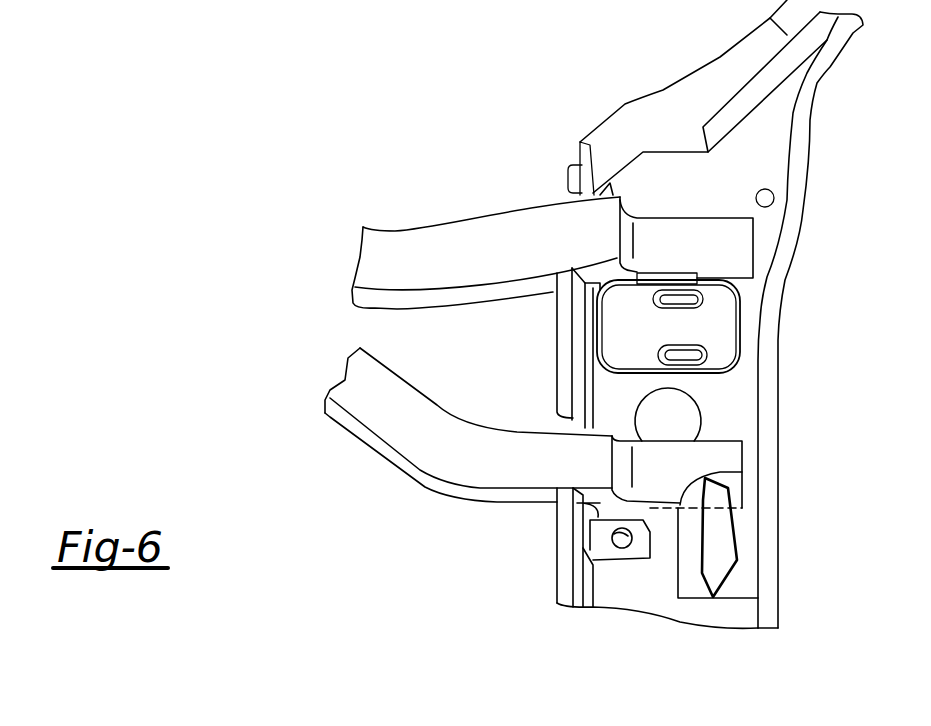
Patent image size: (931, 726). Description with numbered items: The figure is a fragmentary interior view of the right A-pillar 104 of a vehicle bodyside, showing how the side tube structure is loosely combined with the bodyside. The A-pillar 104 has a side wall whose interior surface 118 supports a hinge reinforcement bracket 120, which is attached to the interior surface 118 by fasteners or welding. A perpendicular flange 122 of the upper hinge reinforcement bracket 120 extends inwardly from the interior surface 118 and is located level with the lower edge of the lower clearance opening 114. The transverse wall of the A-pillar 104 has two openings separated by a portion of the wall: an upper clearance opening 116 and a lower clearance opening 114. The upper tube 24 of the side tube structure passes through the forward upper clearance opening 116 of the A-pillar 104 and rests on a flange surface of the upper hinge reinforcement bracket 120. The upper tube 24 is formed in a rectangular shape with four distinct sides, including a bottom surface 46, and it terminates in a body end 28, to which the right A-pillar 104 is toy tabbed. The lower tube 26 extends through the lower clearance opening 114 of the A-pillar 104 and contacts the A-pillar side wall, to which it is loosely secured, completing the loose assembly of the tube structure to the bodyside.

The upper tube 24 is at (409, 247).
The lower tube 26 is at (509, 470).
The body end 28 is at (679, 256).
The bottom surface 46 is at (679, 478).
The A-pillar 104 is at (781, 301).
The lower clearance opening 114 is at (560, 427).
The upper clearance opening 116 is at (577, 200).
The interior surface 118 is at (747, 413).
The hinge reinforcement bracket 120 is at (623, 343).
The perpendicular flange 122 is at (693, 268).